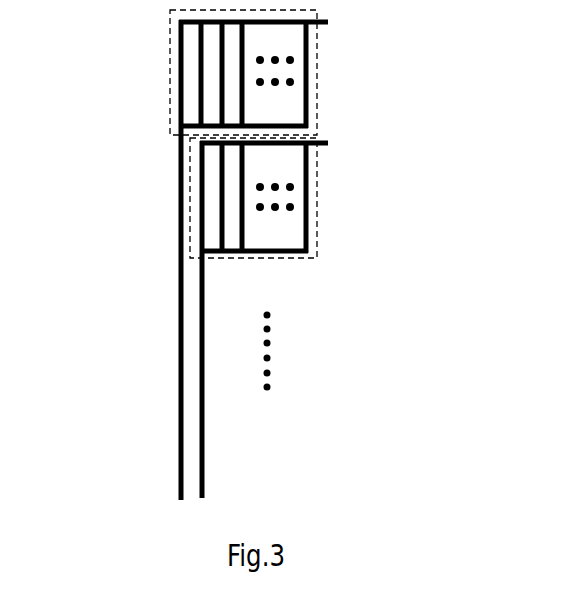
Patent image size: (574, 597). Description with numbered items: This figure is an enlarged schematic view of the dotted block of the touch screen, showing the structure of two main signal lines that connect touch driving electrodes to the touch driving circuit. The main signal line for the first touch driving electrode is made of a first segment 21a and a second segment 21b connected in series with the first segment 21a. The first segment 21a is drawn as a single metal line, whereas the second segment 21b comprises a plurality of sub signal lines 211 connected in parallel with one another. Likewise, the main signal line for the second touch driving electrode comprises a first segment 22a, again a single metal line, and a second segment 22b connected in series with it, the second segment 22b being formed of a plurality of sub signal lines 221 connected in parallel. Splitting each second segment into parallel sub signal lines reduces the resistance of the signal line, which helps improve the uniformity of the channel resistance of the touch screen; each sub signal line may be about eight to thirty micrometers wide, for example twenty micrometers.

The first segment 21a is at (178, 312).
The first segment 22a is at (202, 413).
The second segment 21b is at (172, 70).
The sub signal lines 211 is at (245, 62).
The second segment 22b is at (192, 202).
The sub signal lines 221 is at (245, 187).